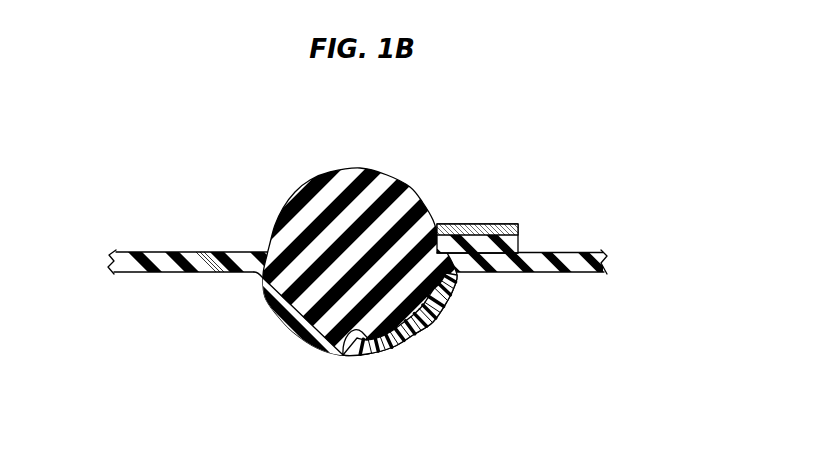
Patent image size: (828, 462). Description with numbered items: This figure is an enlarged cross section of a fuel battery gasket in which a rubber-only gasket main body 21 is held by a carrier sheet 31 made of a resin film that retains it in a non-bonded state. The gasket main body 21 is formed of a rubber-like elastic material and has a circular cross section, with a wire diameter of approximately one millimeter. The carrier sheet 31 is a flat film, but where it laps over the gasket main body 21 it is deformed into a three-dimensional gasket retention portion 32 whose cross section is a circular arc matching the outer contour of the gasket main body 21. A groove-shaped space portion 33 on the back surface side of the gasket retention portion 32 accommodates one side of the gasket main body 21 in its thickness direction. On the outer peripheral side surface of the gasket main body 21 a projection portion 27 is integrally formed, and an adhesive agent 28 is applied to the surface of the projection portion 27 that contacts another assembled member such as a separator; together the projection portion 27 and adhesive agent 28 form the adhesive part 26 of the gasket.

The gasket main body 21 is at (350, 172).
The adhesive part 26 is at (460, 216).
The projection portion 27 is at (495, 253).
The adhesive agent 28 is at (505, 223).
The carrier sheet 31 is at (555, 273).
The gasket retention portion 32 is at (397, 340).
The space portion 33 is at (344, 355).